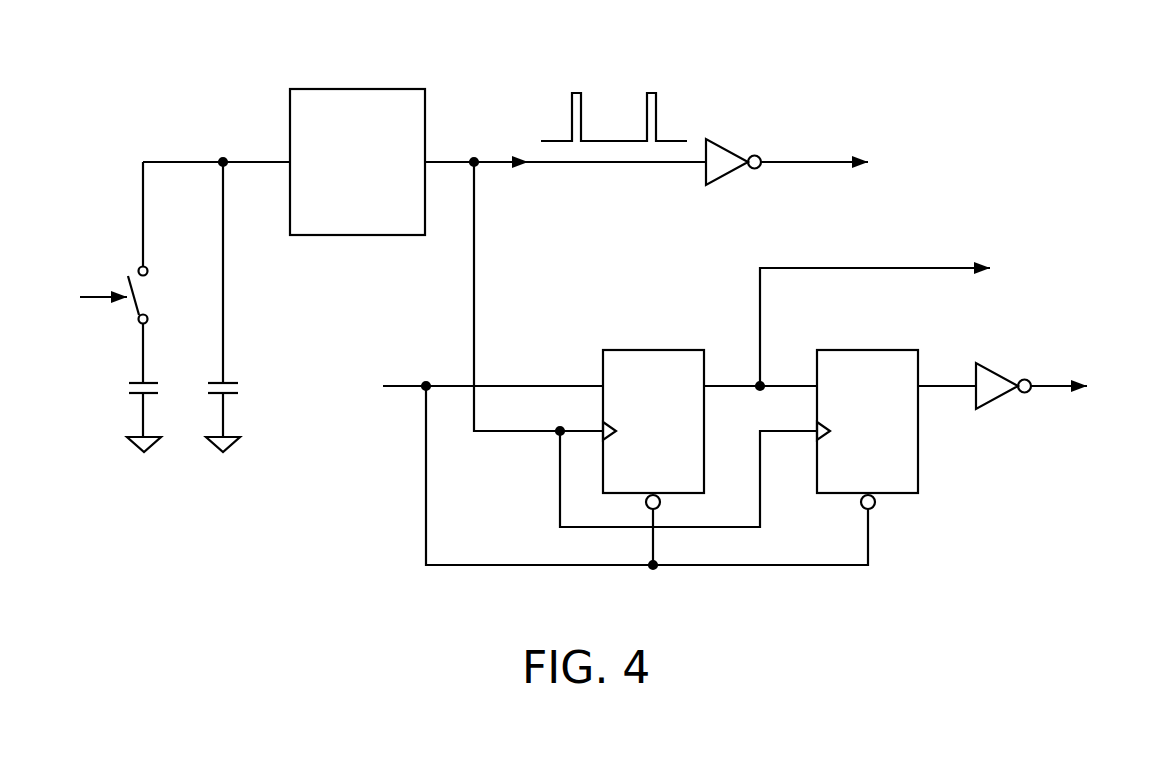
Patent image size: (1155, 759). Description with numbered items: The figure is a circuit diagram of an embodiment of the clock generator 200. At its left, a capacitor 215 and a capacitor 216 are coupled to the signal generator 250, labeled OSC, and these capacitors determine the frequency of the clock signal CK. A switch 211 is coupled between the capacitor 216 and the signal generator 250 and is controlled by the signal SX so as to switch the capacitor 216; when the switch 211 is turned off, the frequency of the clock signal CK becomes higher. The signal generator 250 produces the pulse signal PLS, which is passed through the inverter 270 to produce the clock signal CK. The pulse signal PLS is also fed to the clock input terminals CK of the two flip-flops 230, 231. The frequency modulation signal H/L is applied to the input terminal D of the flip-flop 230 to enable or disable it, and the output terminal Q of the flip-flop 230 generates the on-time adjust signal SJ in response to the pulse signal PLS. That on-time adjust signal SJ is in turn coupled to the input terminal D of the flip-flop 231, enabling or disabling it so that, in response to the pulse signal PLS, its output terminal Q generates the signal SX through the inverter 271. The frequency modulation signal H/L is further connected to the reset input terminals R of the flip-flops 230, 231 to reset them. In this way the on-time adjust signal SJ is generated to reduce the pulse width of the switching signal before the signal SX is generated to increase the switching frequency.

The clock generator 200 is at (1050, 43).
The switch 211 is at (164, 295).
The capacitor 215 is at (248, 307).
The capacitor 216 is at (118, 388).
The flip-flop 230 is at (655, 414).
The flip-flop 231 is at (870, 414).
The signal generator 250 is at (359, 148).
The inverter 270 is at (736, 151).
The inverter 271 is at (1007, 376).